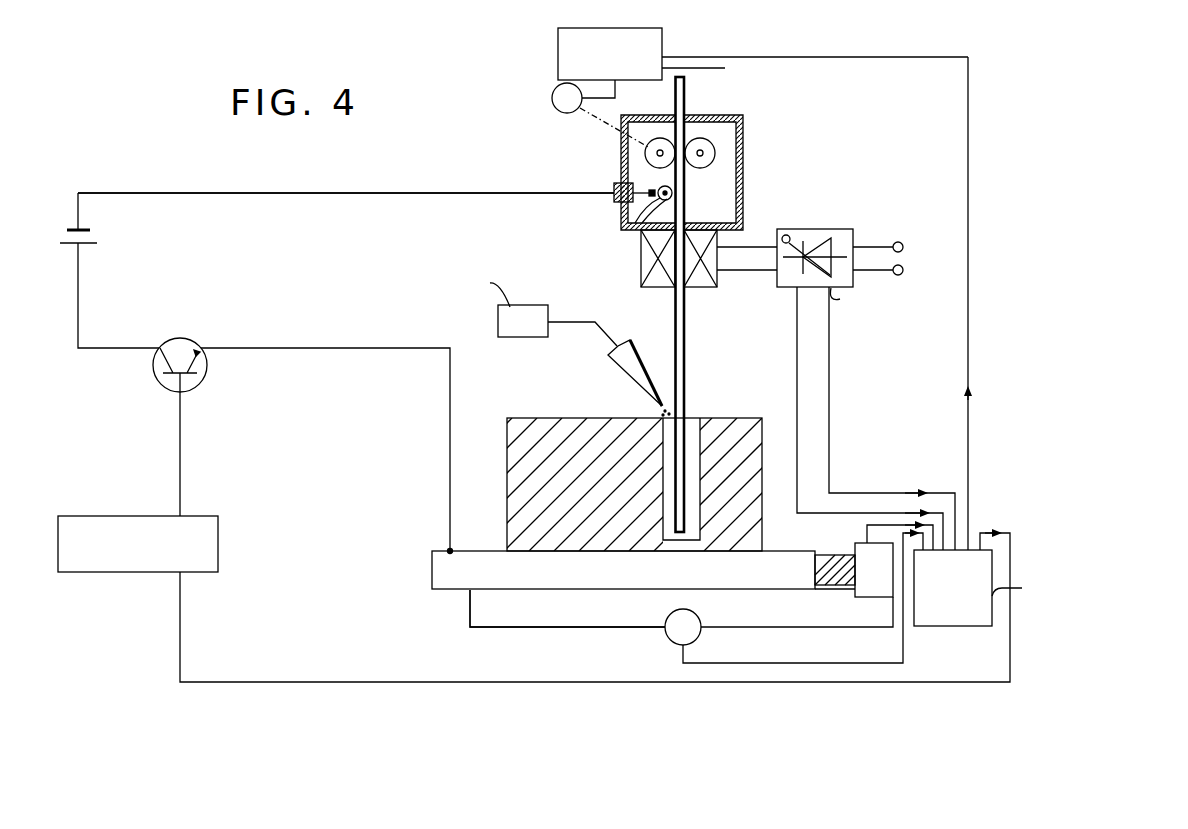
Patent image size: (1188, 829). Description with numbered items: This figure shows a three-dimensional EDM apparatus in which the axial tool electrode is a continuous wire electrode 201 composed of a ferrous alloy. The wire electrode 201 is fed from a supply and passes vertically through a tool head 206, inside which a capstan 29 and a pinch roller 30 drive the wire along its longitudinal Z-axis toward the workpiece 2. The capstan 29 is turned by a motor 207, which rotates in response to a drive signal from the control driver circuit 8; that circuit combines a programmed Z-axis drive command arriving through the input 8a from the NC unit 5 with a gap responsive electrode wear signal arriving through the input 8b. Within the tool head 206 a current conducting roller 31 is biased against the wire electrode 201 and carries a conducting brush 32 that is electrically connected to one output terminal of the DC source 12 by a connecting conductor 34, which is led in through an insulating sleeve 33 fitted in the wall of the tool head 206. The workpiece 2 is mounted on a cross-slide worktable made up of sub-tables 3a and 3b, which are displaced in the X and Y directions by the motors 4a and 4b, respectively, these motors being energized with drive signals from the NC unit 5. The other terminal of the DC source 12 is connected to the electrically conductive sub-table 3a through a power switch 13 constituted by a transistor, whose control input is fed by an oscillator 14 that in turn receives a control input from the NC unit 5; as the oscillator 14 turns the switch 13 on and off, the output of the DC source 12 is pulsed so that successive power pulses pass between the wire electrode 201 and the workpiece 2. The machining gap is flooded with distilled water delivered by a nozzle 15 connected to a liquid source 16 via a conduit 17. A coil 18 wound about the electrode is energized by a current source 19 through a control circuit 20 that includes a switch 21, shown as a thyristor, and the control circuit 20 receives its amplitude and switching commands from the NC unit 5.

The workpiece 2 is at (745, 418).
The sub-table 3a is at (432, 572).
The sub-table 3b is at (480, 630).
The motor 4a is at (857, 545).
The motor 4b is at (668, 638).
The control unit 5 is at (953, 626).
The control driver circuit 8 is at (558, 48).
The input 8a is at (765, 57).
The input 8b is at (710, 68).
The DC source 12 is at (100, 233).
The power switch 13 is at (207, 373).
The oscillator 14 is at (218, 517).
The nozzle 15 is at (637, 352).
The liquid source 16 is at (508, 340).
The conduit 17 is at (567, 323).
The coil 18 is at (710, 287).
The current source 19 is at (904, 268).
The control circuit 20 is at (845, 230).
The switch 21 is at (818, 233).
The capstan 29 is at (645, 153).
The pinch roller 30 is at (715, 153).
The current conducting roller 31 is at (634, 230).
The conducting brush 32 is at (633, 204).
The insulating sleeve 33 is at (614, 197).
The connecting conductor 34 is at (498, 193).
The wire electrode 201 is at (685, 345).
The tool head 206 is at (745, 191).
The motor 207 is at (552, 98).